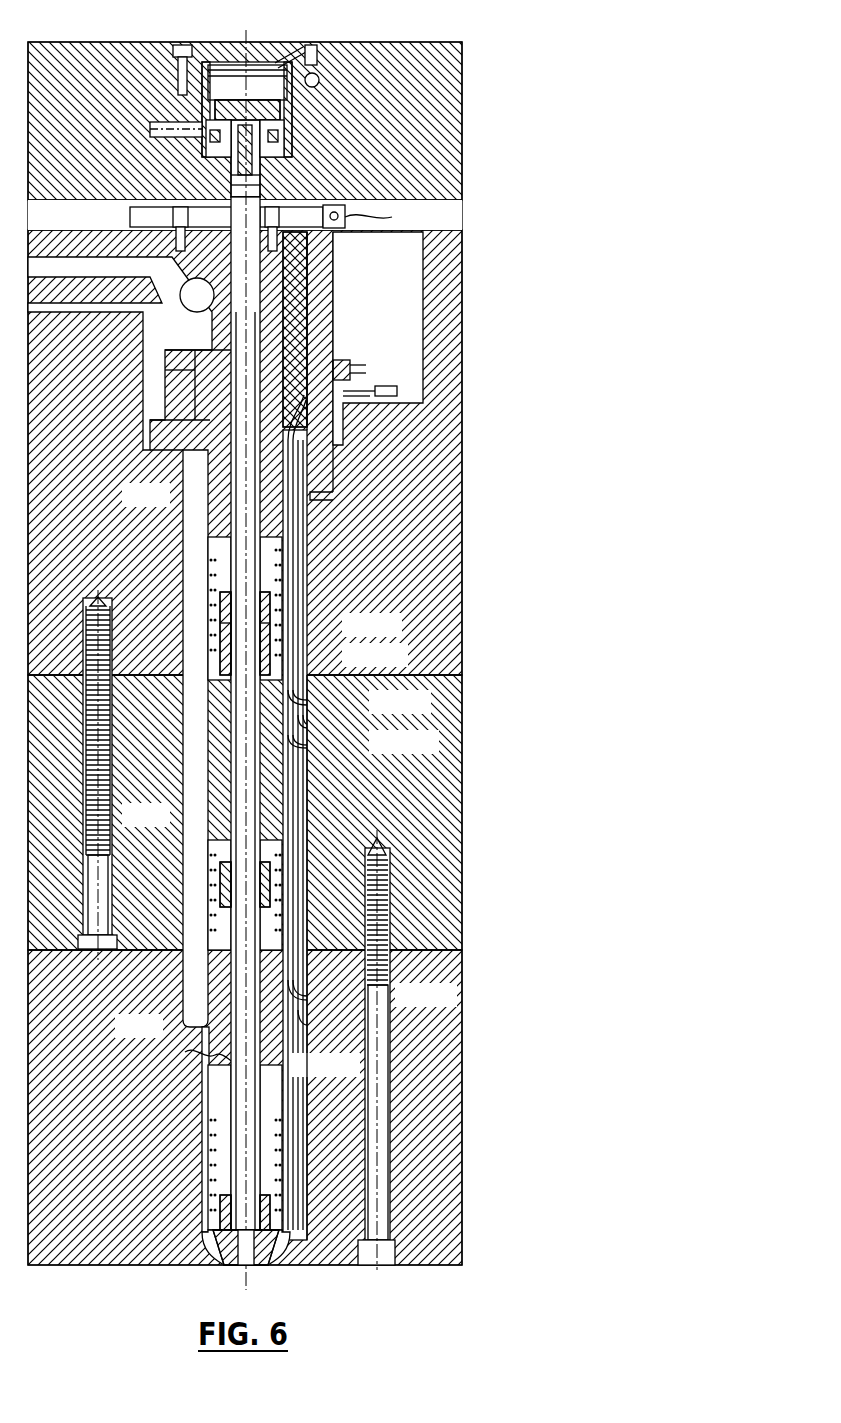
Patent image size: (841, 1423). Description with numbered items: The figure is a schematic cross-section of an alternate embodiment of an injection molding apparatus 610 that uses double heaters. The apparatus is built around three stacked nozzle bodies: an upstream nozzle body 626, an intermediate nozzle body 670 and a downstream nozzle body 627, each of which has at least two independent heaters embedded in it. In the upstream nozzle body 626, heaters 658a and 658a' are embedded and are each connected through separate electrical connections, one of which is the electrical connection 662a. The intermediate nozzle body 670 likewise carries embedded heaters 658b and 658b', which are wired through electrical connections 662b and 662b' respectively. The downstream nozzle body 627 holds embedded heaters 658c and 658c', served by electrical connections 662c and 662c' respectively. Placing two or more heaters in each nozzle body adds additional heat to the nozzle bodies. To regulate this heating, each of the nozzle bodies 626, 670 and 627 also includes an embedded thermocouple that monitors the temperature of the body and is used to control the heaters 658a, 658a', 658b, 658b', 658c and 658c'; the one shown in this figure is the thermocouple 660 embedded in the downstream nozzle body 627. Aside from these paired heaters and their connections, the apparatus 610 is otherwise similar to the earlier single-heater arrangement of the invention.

The injection molding apparatus 610 is at (490, 170).
The electrical connection 662a is at (352, 352).
The upstream nozzle body 626 is at (215, 500).
The downstream nozzle body 627 is at (205, 1030).
The heater 658a is at (306, 617).
The heater 658a' is at (334, 612).
The electrical connection 662b is at (359, 708).
The electrical connection 662b' is at (363, 738).
The intermediate nozzle body 670 is at (220, 820).
The heater 658b is at (374, 893).
The heater 658b' is at (407, 893).
The electrical connection 662c is at (373, 1050).
The electrical connection 662c' is at (324, 1029).
The heater 658c is at (374, 1174).
The heater 658c' is at (402, 1175).
The thermocouple 660 is at (278, 1258).